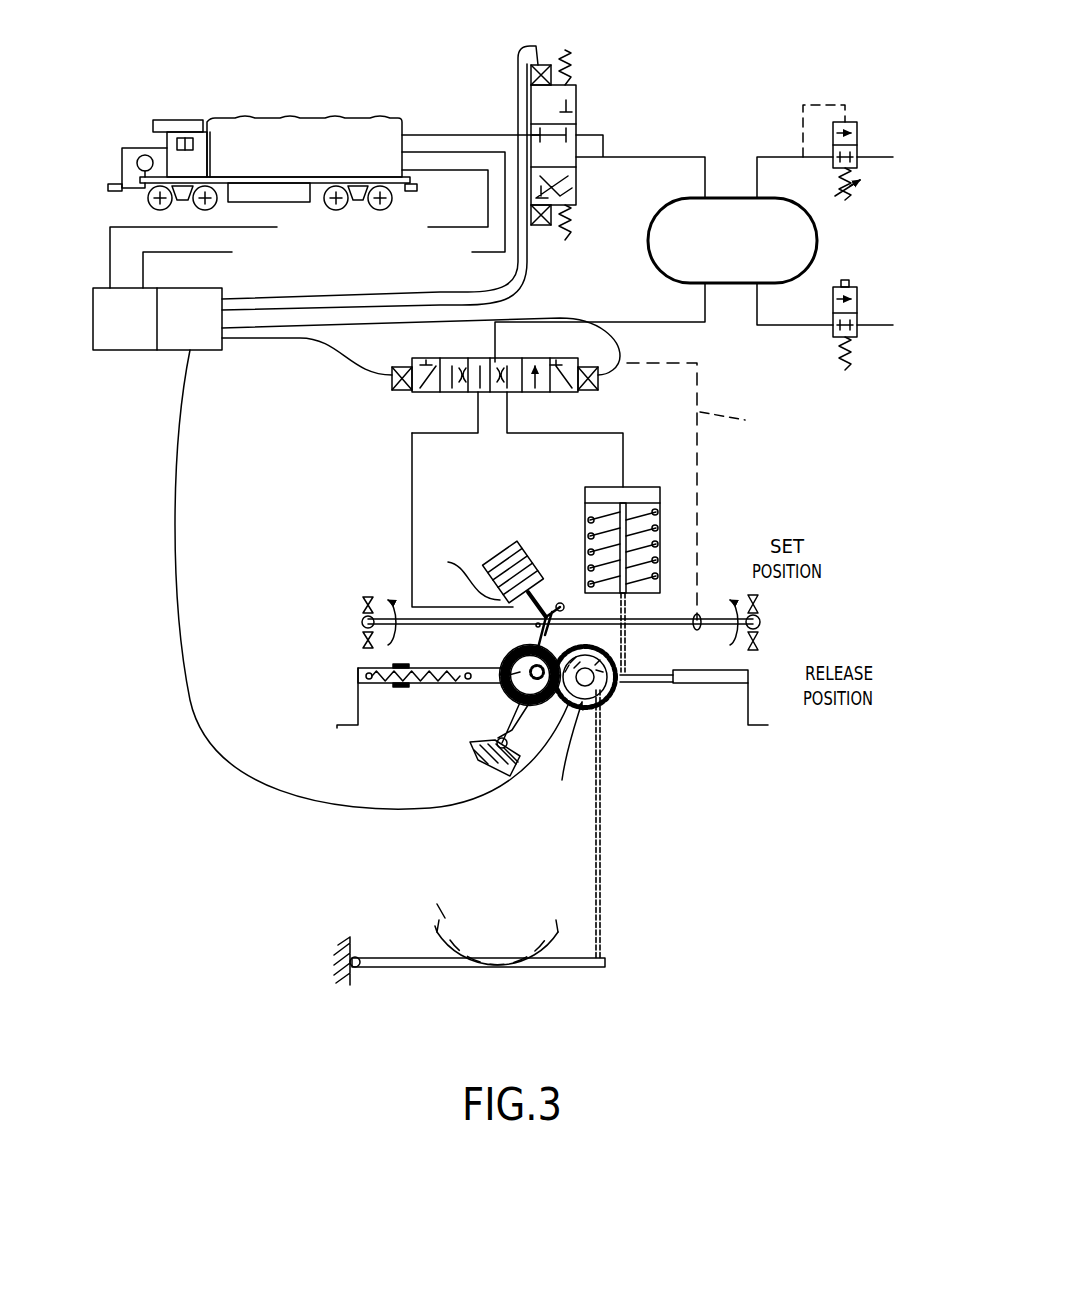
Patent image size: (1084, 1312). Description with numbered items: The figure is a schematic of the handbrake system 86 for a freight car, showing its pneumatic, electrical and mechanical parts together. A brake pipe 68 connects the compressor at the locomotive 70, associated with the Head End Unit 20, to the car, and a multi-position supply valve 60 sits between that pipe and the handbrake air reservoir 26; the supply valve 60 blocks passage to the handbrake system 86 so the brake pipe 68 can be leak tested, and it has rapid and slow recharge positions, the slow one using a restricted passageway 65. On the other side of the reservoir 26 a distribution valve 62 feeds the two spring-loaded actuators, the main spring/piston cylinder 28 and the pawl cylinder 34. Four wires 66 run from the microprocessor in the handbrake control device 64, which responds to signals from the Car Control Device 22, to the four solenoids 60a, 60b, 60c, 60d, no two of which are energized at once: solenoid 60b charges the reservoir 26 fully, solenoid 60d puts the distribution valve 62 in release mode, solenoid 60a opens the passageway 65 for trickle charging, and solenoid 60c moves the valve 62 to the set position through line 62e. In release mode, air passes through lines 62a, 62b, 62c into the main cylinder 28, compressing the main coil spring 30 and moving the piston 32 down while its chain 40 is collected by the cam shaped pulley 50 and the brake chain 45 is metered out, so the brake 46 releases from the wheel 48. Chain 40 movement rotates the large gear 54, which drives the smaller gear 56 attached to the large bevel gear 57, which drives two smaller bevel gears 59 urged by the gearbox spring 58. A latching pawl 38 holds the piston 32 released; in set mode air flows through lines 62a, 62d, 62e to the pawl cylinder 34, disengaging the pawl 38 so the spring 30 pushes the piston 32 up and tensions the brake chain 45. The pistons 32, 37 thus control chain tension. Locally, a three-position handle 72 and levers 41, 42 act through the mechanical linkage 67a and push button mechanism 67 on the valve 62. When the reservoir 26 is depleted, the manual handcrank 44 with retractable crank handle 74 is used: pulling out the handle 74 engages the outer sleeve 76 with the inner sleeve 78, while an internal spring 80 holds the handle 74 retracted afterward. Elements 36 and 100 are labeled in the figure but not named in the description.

The Head End Unit 20 is at (398, 105).
The Car Control Device 22 is at (127, 350).
The handbrake air reservoir 26 is at (722, 198).
The main spring/piston cylinder 28 is at (573, 506).
The main coil spring 30 is at (640, 540).
The main piston 32 is at (628, 503).
The pawl cylinder 34 is at (500, 542).
The motor housing 36 is at (518, 546).
The piston 37 is at (459, 572).
The latching pawl 38 is at (548, 600).
The chain 40 is at (622, 658).
The lever 41 is at (362, 622).
The lever 42 is at (772, 622).
The manual handcrank 44 is at (735, 692).
The brake chain 45 is at (600, 828).
The brake 46 is at (394, 968).
The wheel 48 is at (492, 938).
The cam shaped pulley 50 is at (610, 682).
The large gear 54 is at (608, 702).
The smaller gear 56 is at (514, 664).
The large bevel gear 57 is at (528, 668).
The gearbox spring 58 is at (480, 738).
The smaller bevel gears 59 is at (502, 672).
The supply valve 60 is at (592, 86).
The solenoid 60a is at (541, 64).
The solenoid 60b is at (545, 228).
The solenoid 60c is at (600, 364).
The solenoid 60d is at (394, 370).
The distribution valve 62 is at (395, 390).
The line 62a is at (628, 322).
The line 62b is at (598, 386).
The line 62c is at (500, 434).
The line 62d is at (440, 384).
The line 62e is at (412, 522).
The handbrake control device 64 is at (182, 350).
The restricted passageway 65 is at (550, 186).
The wires 66 is at (232, 295).
The push button mechanism 67 is at (700, 614).
The mechanical linkage 67a is at (742, 491).
The brake pipe 68 is at (470, 82).
The locomotive 70 is at (235, 124).
The handle 72 is at (368, 597).
The retractable crank handle 74 is at (358, 712).
The outer sleeve 76 is at (383, 684).
The inner sleeve 78 is at (444, 684).
The internal spring 80 is at (408, 688).
The handbrake system 86 is at (186, 808).
The power supply 100 is at (110, 227).